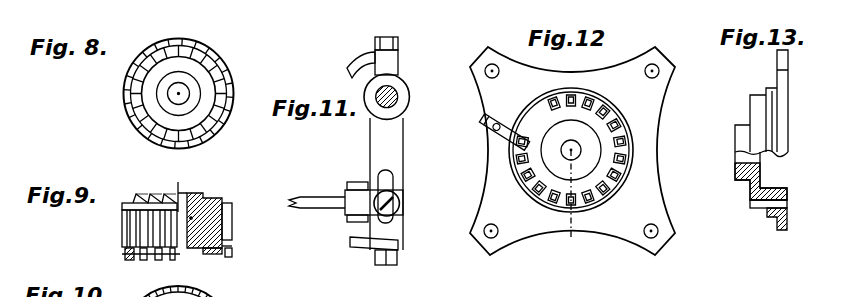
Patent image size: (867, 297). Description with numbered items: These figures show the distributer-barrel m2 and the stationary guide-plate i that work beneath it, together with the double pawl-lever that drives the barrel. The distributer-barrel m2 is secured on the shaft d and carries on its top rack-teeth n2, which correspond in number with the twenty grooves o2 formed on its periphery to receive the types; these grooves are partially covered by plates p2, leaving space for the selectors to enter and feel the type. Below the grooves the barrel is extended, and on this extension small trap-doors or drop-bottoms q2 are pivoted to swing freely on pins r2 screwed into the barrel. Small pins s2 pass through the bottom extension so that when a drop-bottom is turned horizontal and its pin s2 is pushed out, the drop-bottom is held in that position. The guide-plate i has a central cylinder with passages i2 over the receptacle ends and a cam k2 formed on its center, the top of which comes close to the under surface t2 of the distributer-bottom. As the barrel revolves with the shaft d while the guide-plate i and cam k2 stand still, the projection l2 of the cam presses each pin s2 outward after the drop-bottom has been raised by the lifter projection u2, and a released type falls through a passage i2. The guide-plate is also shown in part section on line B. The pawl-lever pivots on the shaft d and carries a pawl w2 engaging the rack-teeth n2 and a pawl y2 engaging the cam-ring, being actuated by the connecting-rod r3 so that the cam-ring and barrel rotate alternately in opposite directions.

In FIG. 8, the distributer-barrel m2 is at (185, 92).
In FIG. 9, the distributer-barrel m2 is at (200, 209).
In FIG. 8, the grooves o2 is at (152, 53).
In FIG. 9, the grooves o2 is at (232, 222).
In FIG. 8, the rack-teeth n2 is at (134, 98).
In FIG. 9, the rack-teeth n2 is at (140, 197).
In FIG. 9, the pins s2 is at (162, 259).
In FIG. 9, the plates p2 is at (166, 223).
In FIG. 9, the under surface of distributer-bottom t2 is at (205, 259).
In FIG. 9, the pins r2 is at (233, 246).
In FIG. 11, the pins r2 is at (386, 184).
In FIG. 9, the drop-bottoms q2 is at (232, 252).
In FIG. 11, the pawl w2 is at (361, 64).
In FIG. 11, the shaft d is at (409, 95).
In FIG. 11, the connecting-rod r3 is at (346, 200).
In FIG. 11, the pawl y2 is at (363, 250).
In FIG. 12, the section line B is at (572, 154).
In FIG. 12, the guide-plate i is at (571, 148).
In FIG. 13, the guide-plate i is at (766, 103).
In FIG. 12, the passages i2 is at (540, 111).
In FIG. 13, the passages i2 is at (766, 206).
In FIG. 12, the projection l2 is at (568, 150).
In FIG. 12, the cam k2 is at (583, 147).
In FIG. 13, the cam k2 is at (731, 136).
In FIG. 12, the projection u2 is at (494, 137).